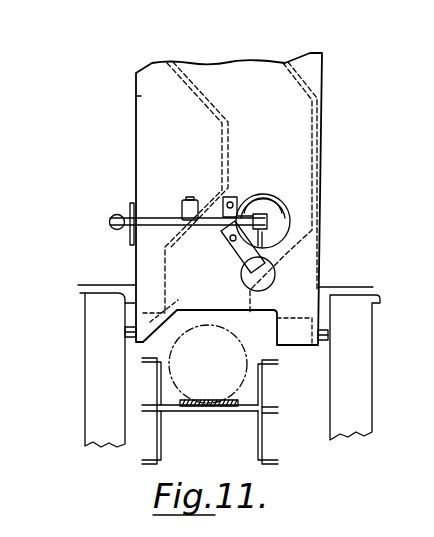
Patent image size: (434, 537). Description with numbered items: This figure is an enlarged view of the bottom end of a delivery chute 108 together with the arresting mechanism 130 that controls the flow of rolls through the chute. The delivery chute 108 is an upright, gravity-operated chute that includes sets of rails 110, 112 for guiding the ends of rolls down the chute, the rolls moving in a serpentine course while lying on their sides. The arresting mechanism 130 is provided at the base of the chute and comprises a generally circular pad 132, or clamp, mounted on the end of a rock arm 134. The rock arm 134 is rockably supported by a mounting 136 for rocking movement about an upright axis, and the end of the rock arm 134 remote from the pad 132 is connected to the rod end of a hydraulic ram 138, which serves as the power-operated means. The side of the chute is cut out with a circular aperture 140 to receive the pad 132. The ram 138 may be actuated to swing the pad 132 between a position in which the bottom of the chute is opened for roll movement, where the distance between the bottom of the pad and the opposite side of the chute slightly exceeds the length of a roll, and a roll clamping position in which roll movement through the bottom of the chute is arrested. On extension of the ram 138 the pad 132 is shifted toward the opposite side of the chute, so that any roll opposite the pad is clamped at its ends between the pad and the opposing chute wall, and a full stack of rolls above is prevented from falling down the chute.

The delivery chute 108 is at (290, 112).
The rails 110 is at (193, 87).
The rails 112 is at (300, 74).
The arresting mechanism 130 is at (155, 238).
The pad 132 is at (285, 210).
The rock arm 134 is at (211, 228).
The mounting 136 is at (181, 211).
The hydraulic ram 138 is at (115, 214).
The circular aperture 140 is at (265, 192).